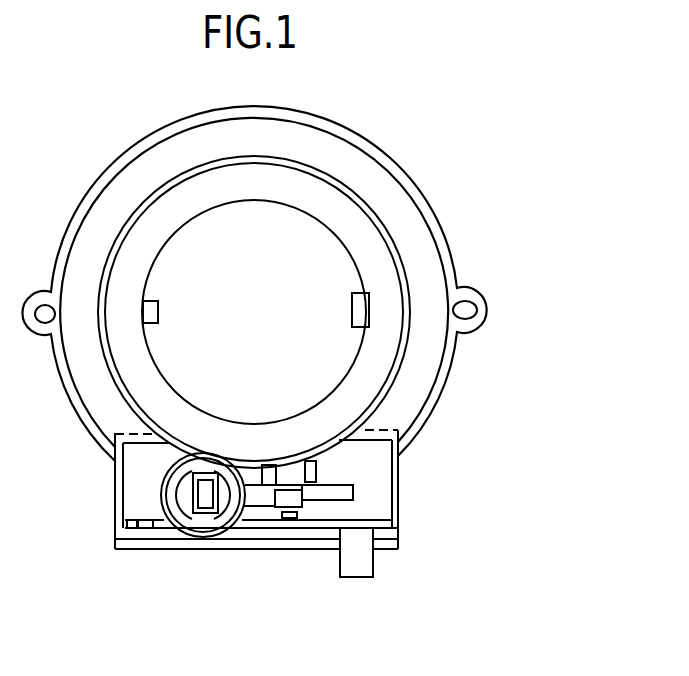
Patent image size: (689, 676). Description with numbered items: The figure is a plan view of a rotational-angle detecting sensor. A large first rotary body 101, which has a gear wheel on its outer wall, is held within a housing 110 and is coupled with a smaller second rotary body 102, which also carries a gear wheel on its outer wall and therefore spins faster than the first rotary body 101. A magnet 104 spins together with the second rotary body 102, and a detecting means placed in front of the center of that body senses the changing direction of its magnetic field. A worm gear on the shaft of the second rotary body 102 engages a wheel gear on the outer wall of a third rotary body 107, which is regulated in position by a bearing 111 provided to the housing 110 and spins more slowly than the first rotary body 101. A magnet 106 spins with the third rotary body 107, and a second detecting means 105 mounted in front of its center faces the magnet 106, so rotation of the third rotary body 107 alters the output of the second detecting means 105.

The first rotary body 101 is at (385, 265).
The housing 110 is at (458, 363).
The bearing 111 is at (316, 465).
The third rotary body 107 is at (353, 495).
The second rotary body 102 is at (178, 527).
The magnet 104 is at (203, 510).
The magnet 106 is at (280, 508).
The second detecting means 105 is at (293, 519).